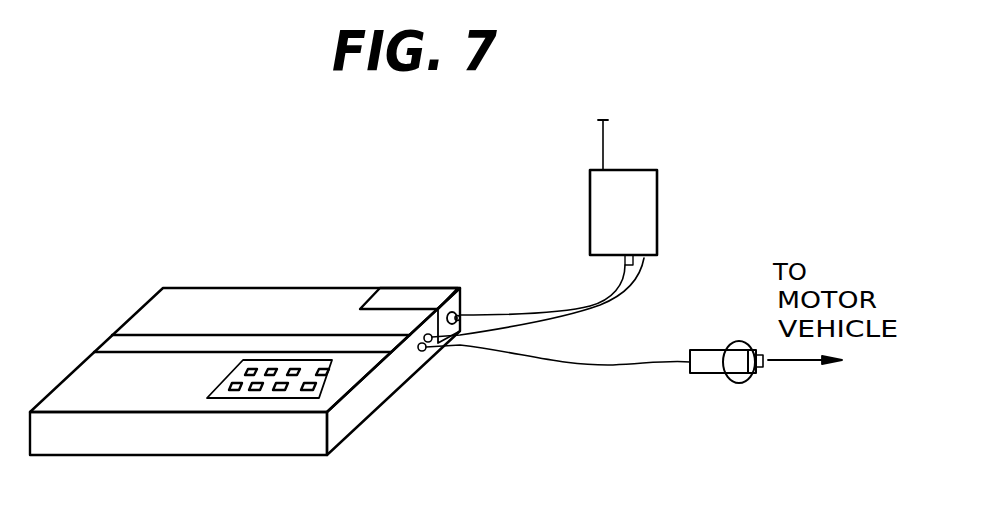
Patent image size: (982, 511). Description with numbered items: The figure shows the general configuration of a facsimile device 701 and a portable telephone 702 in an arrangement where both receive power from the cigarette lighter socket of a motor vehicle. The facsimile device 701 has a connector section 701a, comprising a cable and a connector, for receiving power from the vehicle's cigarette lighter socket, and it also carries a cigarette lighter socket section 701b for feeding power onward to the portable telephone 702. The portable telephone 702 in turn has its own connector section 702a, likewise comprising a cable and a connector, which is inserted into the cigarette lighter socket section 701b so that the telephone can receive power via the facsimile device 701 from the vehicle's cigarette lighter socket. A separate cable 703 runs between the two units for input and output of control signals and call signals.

The facsimile device 701 is at (202, 308).
The connector section 701a is at (720, 362).
The cigarette lighter socket section 701b is at (407, 292).
The portable telephone 702 is at (647, 190).
The connector section 702a is at (463, 312).
The cable 703 is at (545, 328).